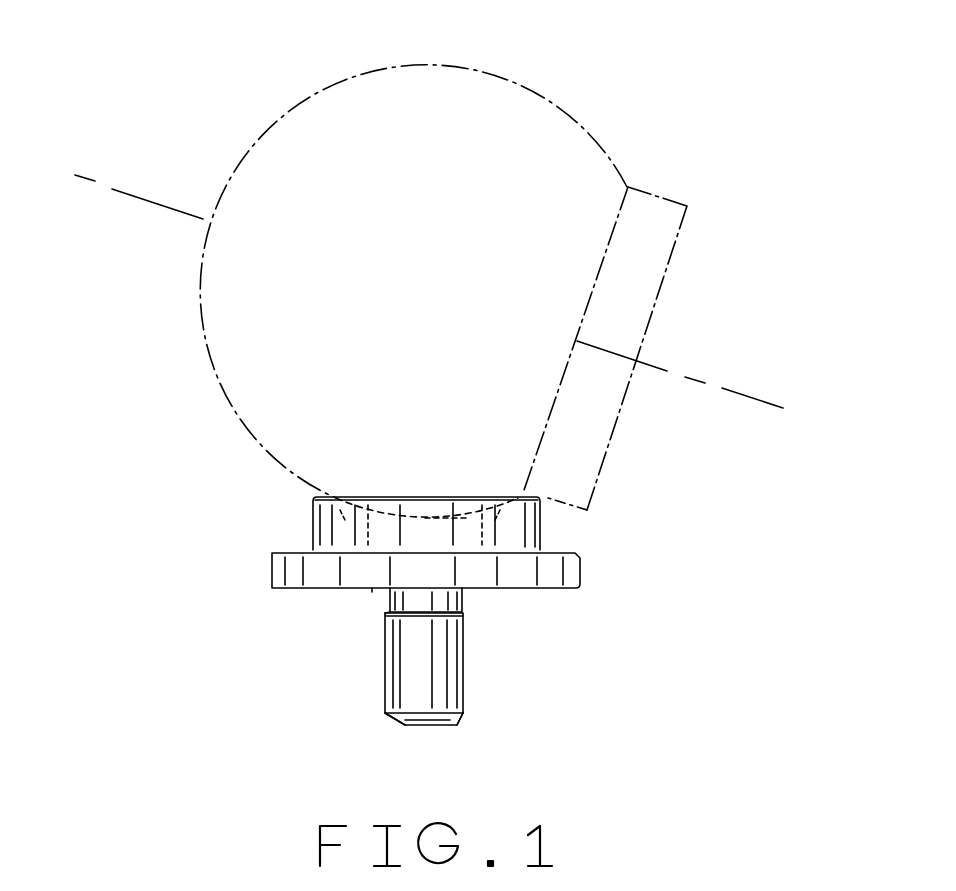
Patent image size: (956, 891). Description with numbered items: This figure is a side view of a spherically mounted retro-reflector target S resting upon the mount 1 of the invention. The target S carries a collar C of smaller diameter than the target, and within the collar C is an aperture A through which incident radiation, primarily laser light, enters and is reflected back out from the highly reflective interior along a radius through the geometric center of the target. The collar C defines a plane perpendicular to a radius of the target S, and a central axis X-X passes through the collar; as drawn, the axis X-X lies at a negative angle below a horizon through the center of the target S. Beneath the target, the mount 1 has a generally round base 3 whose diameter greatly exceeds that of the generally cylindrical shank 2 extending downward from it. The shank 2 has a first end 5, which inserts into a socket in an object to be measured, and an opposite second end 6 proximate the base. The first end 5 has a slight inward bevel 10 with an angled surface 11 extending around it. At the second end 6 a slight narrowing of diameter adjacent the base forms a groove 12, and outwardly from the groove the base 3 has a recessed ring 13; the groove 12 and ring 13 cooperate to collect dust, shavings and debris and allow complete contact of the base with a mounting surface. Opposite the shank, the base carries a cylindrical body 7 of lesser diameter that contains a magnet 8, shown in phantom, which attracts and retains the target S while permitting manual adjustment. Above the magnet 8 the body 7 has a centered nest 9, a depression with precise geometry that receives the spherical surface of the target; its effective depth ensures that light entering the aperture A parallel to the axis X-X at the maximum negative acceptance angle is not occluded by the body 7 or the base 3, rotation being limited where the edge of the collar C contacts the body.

The mount 1 is at (302, 641).
The shank 2 is at (433, 658).
The base 3 is at (562, 573).
The first end 5 is at (433, 728).
The second end 6 is at (467, 603).
The body 7 is at (518, 533).
The magnet 8 is at (388, 535).
The nest 9 is at (472, 511).
The bevel 10 is at (400, 720).
The angled surface 11 is at (459, 724).
The groove 12 is at (383, 607).
The ring 13 is at (378, 592).
The spherically mounted retro-reflector target S is at (490, 74).
The collar C is at (650, 224).
The aperture A is at (670, 291).
The central axis X- X is at (426, 294).